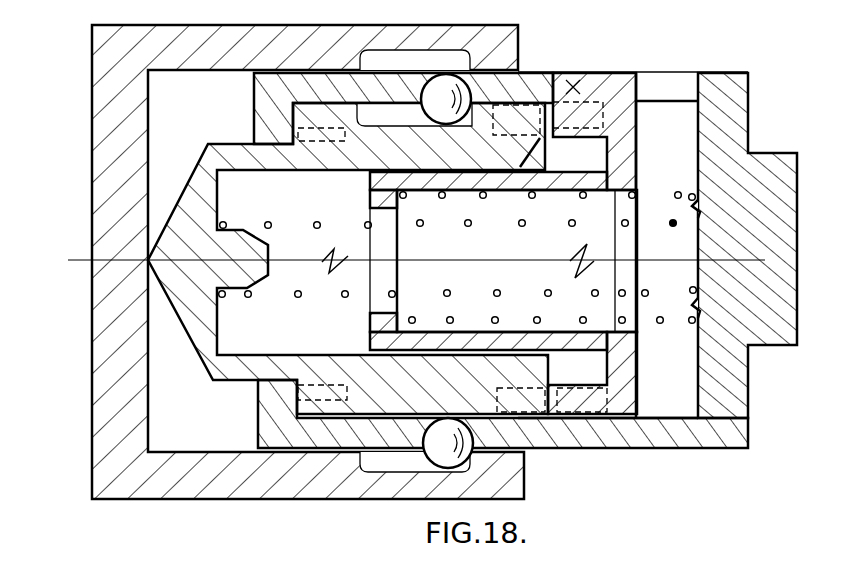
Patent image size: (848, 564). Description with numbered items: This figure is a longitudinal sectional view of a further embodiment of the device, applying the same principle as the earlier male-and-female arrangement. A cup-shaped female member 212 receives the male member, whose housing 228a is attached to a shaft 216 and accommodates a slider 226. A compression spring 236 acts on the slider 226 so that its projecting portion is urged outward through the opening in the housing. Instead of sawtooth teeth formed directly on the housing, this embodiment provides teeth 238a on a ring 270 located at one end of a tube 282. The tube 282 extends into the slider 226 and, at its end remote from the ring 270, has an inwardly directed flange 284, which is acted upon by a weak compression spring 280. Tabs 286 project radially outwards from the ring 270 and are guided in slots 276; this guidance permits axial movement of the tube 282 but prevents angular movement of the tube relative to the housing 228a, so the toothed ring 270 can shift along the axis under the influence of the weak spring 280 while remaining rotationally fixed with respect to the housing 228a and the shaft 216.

The cup-shaped female member 212 is at (107, 402).
The shaft 216 is at (770, 350).
The slider 226 is at (350, 362).
The housing 228a is at (619, 436).
The compression spring 236 is at (247, 296).
The teeth 238a is at (598, 96).
The ring 270 is at (627, 366).
The slots 276 is at (675, 82).
The weak compression spring 280 is at (660, 323).
The tube 282 is at (515, 340).
The inwardly directed flange 284 is at (390, 316).
The tabs 286 is at (573, 87).